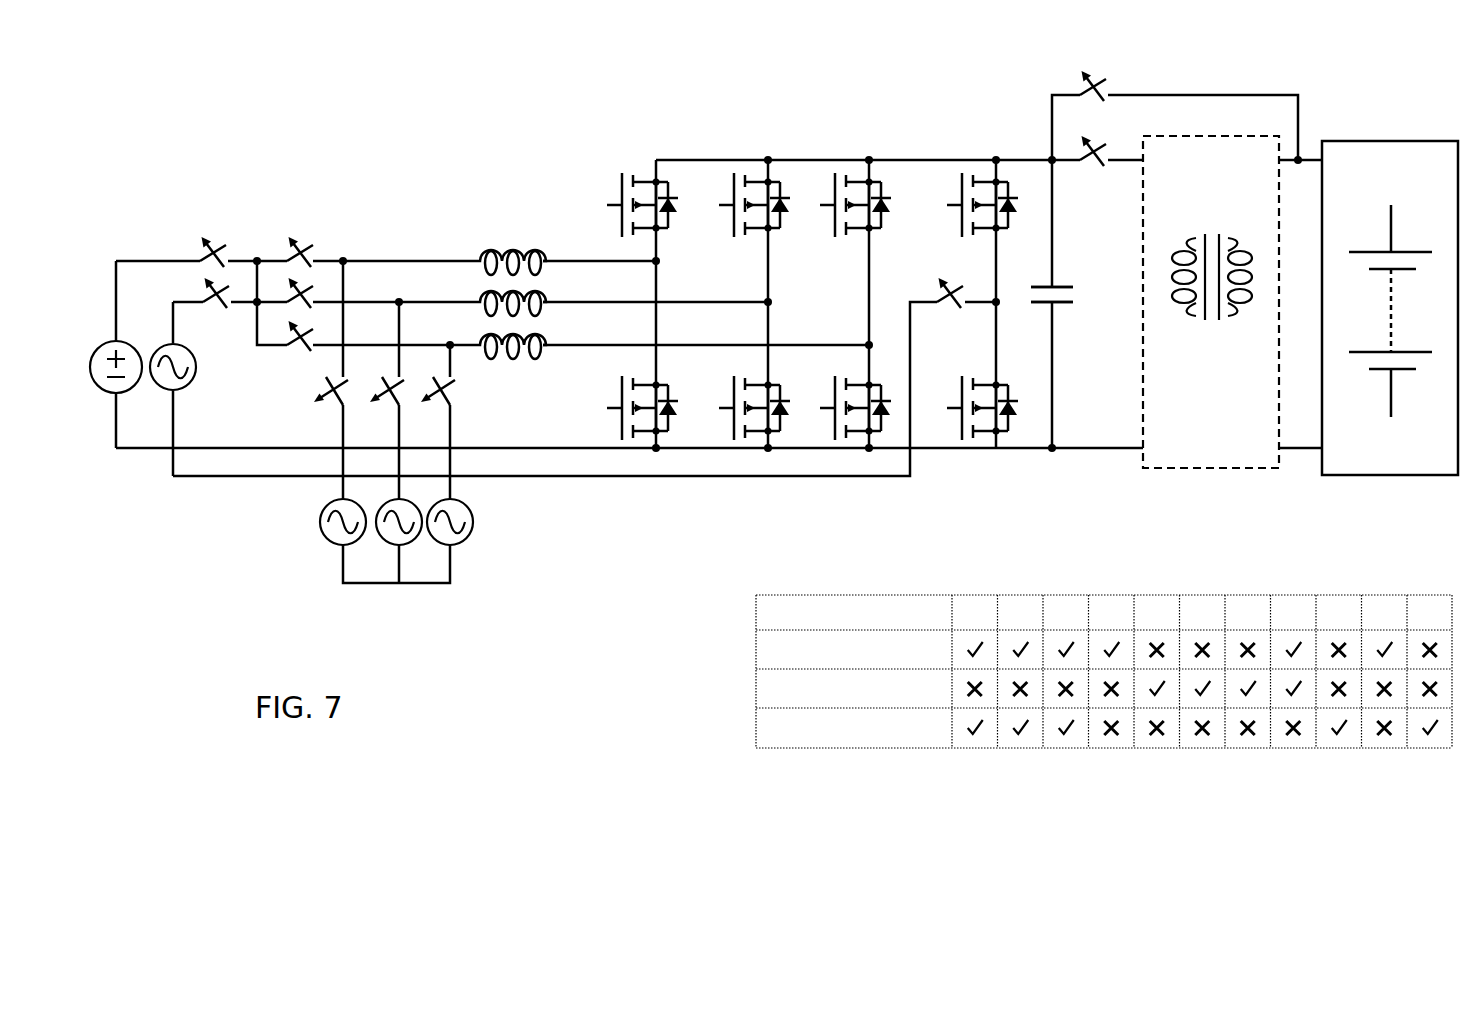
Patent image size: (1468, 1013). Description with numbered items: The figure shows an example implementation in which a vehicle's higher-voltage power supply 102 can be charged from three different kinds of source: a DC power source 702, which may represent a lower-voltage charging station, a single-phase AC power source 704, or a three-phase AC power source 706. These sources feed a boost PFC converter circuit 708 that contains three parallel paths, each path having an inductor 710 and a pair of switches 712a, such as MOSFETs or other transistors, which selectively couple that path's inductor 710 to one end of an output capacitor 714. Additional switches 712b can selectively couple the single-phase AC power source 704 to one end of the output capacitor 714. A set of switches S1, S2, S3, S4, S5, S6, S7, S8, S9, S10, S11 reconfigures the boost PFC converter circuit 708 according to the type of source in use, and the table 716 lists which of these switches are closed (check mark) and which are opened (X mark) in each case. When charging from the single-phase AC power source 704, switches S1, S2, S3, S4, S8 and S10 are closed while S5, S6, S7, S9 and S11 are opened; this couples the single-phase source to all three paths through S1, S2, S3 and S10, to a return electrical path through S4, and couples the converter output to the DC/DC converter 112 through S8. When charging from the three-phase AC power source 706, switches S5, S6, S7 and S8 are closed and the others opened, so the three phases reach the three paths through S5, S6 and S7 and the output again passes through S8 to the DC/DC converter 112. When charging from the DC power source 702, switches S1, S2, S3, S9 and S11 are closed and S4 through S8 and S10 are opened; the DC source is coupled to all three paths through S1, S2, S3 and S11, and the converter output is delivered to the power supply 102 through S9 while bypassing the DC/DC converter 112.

The power supply 102 is at (1382, 476).
The DC/DC converter 112 is at (1222, 470).
The DC power source 702 is at (104, 391).
The single-phase AC power source 704 is at (190, 388).
The three-phase AC power source 706 is at (320, 523).
The boost PFC converter circuit 708 is at (469, 250).
The inductor 710 is at (487, 251).
The switches 712a is at (620, 395).
The additional switches 712b is at (958, 231).
The output capacitor 714 is at (1060, 285).
The table 716 is at (756, 707).
The switch S1 is at (300, 249).
The switch S2 is at (300, 289).
The switch S3 is at (300, 347).
The switch S4 is at (953, 287).
The switch S5 is at (450, 391).
The switch S6 is at (379, 391).
The switch S7 is at (320, 391).
The switch S8 is at (1095, 161).
The switch S9 is at (1095, 83).
The switch S10 is at (217, 303).
The switch S11 is at (216, 249).